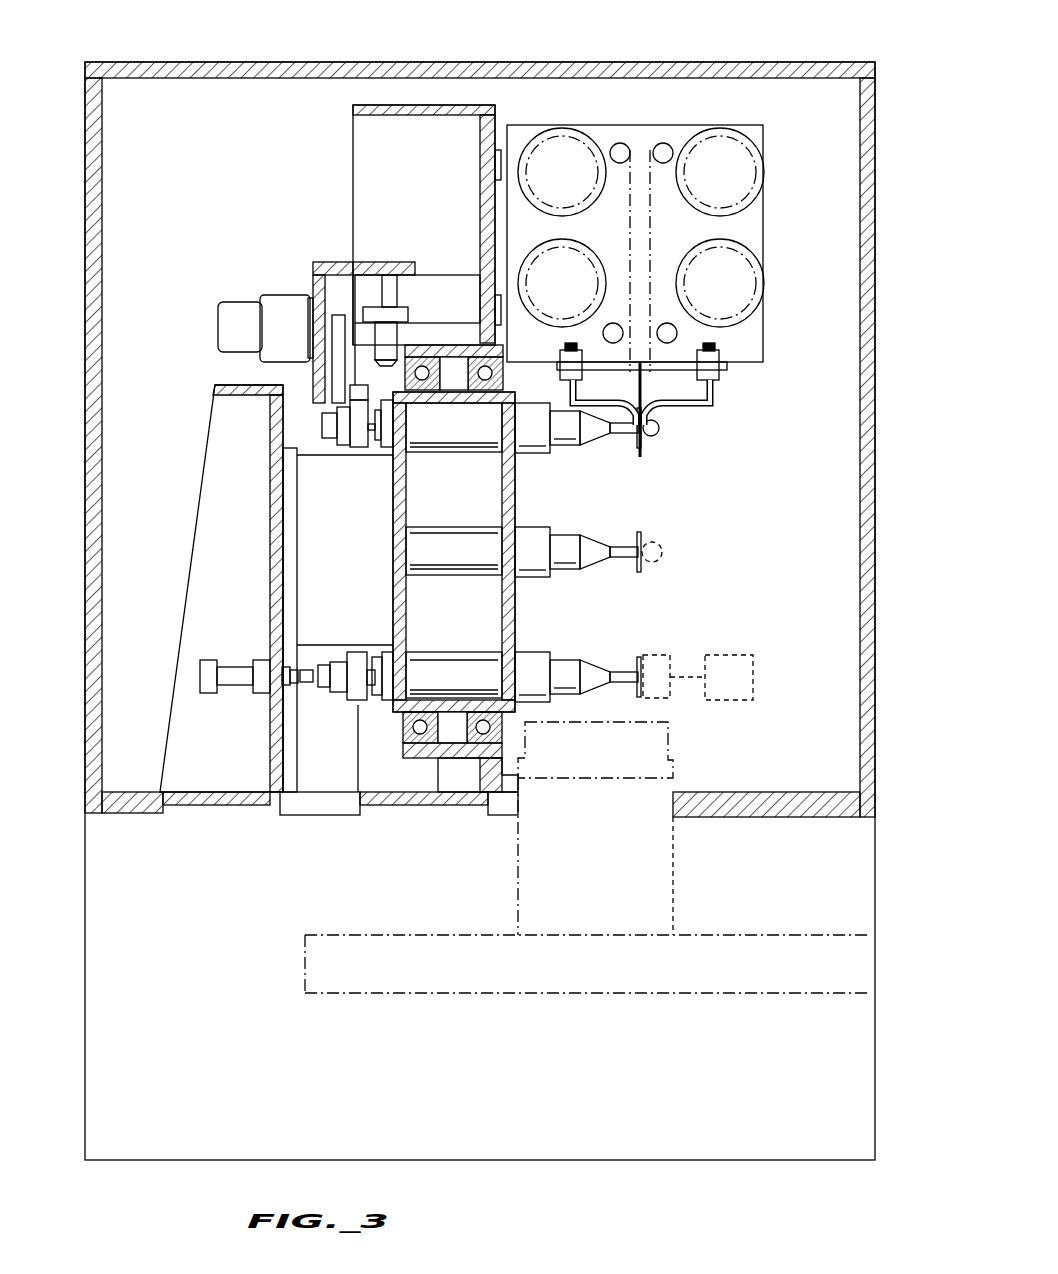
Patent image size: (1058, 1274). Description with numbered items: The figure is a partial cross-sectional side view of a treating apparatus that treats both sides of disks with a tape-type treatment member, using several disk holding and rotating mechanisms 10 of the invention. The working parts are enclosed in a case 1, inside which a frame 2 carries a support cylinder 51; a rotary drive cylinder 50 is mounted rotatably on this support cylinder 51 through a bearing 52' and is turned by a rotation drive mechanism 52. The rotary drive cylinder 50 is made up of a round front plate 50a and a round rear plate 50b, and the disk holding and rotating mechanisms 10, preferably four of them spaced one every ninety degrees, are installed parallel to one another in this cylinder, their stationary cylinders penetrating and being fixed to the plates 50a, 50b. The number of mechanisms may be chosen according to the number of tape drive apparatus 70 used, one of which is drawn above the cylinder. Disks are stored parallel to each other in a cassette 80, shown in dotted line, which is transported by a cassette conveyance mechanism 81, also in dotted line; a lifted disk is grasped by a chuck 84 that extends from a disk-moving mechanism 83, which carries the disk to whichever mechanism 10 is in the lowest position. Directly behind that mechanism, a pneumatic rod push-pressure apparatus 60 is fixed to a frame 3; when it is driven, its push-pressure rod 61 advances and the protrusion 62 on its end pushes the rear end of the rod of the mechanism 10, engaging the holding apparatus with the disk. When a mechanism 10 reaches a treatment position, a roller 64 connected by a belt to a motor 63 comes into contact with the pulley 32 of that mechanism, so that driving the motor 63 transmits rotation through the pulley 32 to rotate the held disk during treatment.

The case 1 is at (402, 68).
The frame 2 is at (335, 805).
The frame 3 is at (243, 805).
The disk holding and rotating mechanism 10 is at (605, 450).
The pulley 32 is at (345, 432).
The rotary drive cylinder 50 is at (535, 483).
The round front plate 50a is at (510, 495).
The round rear plate 50b is at (397, 560).
The support cylinder 51 is at (440, 765).
The rotation drive mechanism 52 is at (254, 620).
The bearing 52' is at (369, 792).
The pneumatic rod push-pressure apparatus 60 is at (205, 686).
The push-pressure rod 61 is at (300, 656).
The protrusion 62 is at (300, 693).
The motor 63 is at (292, 300).
The roller 64 is at (360, 393).
The tape drive apparatus 70 is at (640, 130).
The cassette 80 is at (667, 737).
The cassette conveyance mechanism 81 is at (673, 853).
The disk-moving mechanism 83 is at (757, 672).
The chuck 84 is at (665, 658).